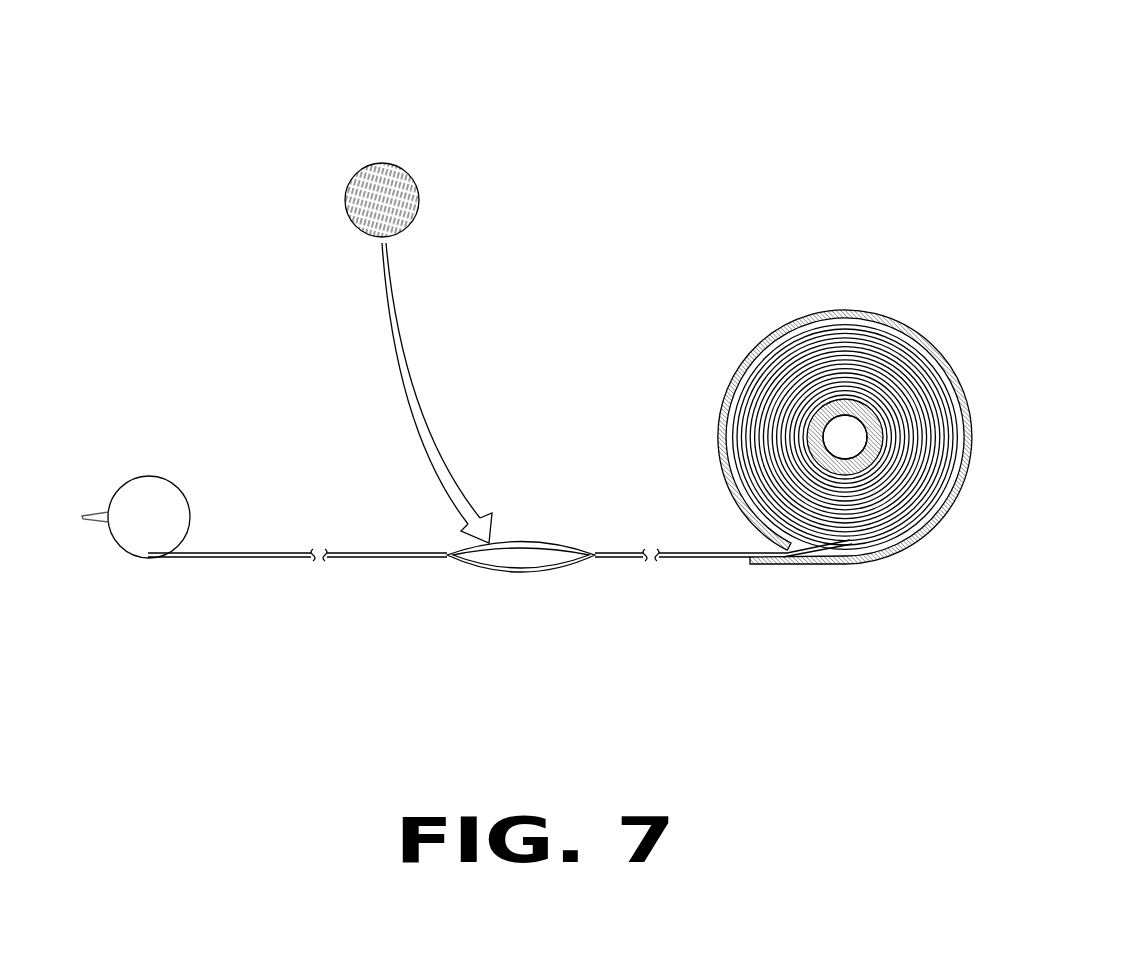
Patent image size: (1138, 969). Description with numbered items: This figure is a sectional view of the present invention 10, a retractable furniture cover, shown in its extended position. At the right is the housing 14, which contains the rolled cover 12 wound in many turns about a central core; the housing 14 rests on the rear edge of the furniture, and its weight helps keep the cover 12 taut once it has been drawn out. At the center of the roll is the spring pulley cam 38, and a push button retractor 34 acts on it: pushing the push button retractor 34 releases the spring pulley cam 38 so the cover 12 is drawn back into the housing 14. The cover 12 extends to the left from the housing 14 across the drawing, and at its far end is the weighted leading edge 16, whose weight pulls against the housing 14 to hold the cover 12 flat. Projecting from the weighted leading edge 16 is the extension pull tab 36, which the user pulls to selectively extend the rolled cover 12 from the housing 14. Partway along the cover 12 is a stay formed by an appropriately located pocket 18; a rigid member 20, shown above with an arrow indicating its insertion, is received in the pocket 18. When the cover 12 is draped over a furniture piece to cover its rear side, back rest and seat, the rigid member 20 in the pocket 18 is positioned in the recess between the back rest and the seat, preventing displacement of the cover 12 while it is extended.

The present invention 10 is at (1027, 131).
The rolled cover 12 is at (688, 557).
The housing 14 is at (863, 313).
The weighted leading edge 16 is at (185, 498).
The pocket 18 is at (540, 543).
The rigid member 20 is at (346, 193).
The push button retractor 34 is at (833, 427).
The extension pull tab 36 is at (97, 512).
The spring pulley cam 38 is at (864, 410).